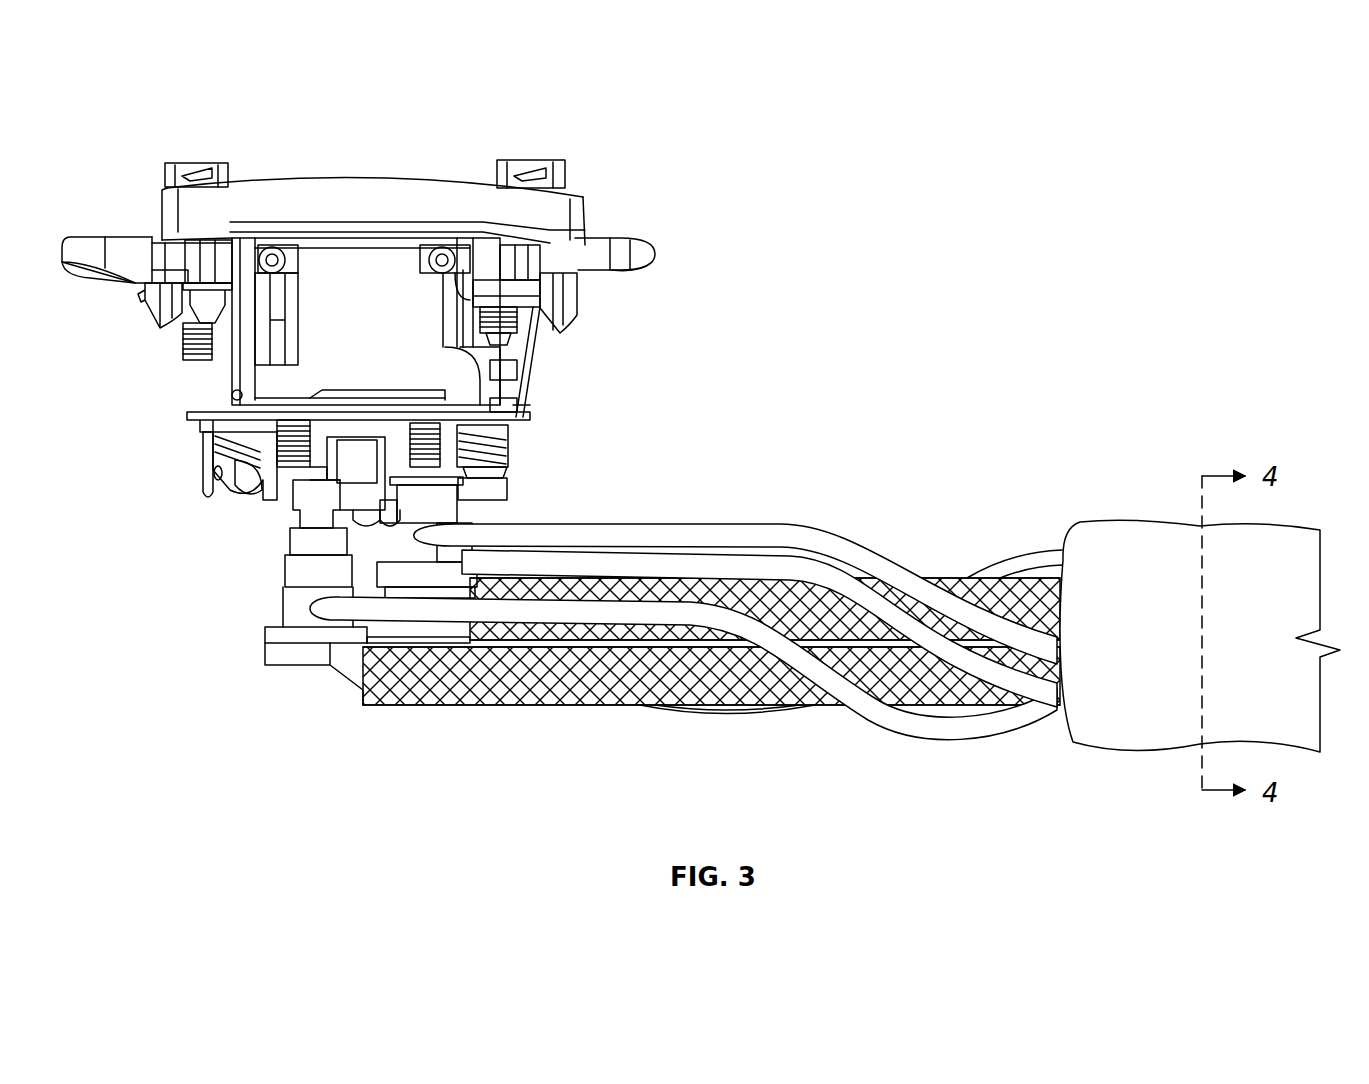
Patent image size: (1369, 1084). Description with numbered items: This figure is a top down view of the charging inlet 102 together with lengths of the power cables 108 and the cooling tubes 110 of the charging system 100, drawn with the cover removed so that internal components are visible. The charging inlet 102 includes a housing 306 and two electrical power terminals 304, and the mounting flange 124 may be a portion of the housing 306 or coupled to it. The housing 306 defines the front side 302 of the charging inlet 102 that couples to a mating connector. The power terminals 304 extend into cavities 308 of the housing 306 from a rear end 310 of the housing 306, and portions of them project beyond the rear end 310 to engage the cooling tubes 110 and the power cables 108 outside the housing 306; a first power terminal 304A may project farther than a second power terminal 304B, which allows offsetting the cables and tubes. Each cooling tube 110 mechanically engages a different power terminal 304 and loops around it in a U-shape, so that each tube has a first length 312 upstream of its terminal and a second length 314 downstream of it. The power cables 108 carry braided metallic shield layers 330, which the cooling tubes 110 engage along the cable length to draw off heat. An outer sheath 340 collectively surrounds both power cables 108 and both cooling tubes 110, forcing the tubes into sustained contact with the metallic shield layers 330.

The charging system 100 is at (888, 222).
The charging inlet 102 is at (597, 224).
The power cables 108 is at (877, 610).
The cooling tubes 110 is at (815, 550).
The mounting flange 124 is at (120, 247).
The front side 302 is at (283, 182).
The electrical power terminals 304 is at (298, 574).
The first power terminal 304A is at (292, 590).
The second power terminal 304B is at (430, 510).
The housing 306 is at (418, 198).
The cavities 308 is at (267, 501).
The rear end 310 is at (207, 499).
The first length 312 is at (615, 545).
The second length 314 is at (663, 572).
The metallic shield layers 330 is at (812, 605).
The outer sheath 340 is at (1130, 553).